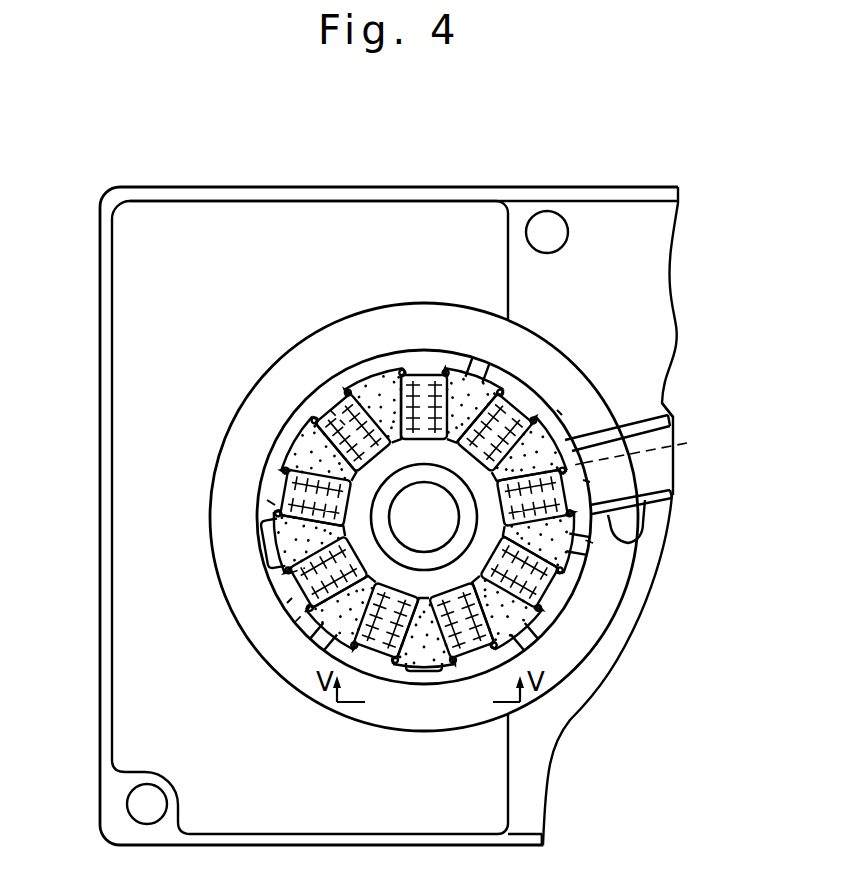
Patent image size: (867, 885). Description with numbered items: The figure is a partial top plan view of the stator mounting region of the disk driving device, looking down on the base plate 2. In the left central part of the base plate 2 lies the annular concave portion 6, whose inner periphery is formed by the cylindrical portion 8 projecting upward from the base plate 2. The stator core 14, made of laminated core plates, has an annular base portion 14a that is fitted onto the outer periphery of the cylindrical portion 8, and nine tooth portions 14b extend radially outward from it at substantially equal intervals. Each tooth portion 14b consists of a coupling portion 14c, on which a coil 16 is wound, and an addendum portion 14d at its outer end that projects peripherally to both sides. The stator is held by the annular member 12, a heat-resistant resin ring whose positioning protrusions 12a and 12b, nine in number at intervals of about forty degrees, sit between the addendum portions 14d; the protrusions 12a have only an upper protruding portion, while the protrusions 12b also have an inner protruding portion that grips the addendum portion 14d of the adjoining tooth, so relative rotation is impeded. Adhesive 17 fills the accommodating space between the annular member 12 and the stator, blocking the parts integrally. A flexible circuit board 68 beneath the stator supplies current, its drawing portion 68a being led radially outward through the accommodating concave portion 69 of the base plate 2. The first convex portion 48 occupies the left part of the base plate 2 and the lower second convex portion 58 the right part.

The base plate 2 is at (233, 182).
The annular concave portion 6 is at (245, 598).
The cylindrical portion 8 is at (395, 503).
The annular member 12 is at (456, 335).
The positioning protrusion 12a is at (468, 340).
The positioning protrusion 12b is at (443, 668).
The stator core 14 is at (520, 383).
The annular base portion 14a is at (363, 553).
The tooth portion 14b is at (330, 410).
The coupling portion 14c is at (290, 573).
The addendum portion 14d is at (267, 500).
The coil 16 is at (367, 400).
The adhesive 17 is at (300, 470).
The first convex portion 48 is at (150, 333).
The second convex portion 58 is at (598, 268).
The flexible circuit board 68 is at (540, 408).
The drawing portion 68a is at (673, 423).
The accommodating concave portion 69 is at (662, 403).